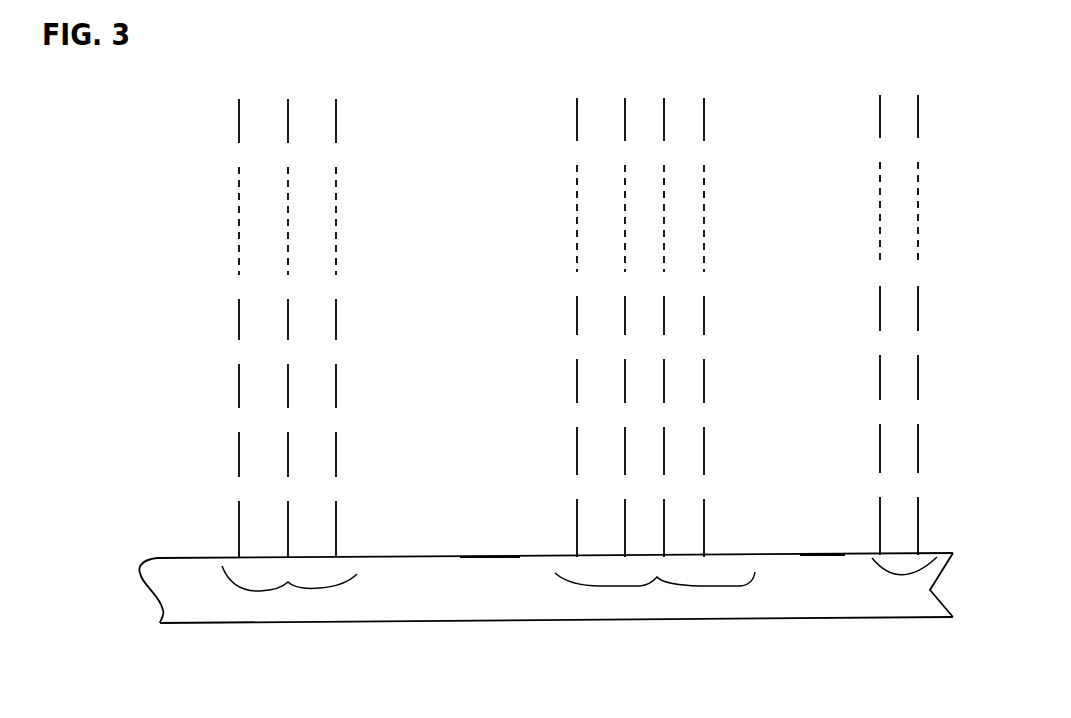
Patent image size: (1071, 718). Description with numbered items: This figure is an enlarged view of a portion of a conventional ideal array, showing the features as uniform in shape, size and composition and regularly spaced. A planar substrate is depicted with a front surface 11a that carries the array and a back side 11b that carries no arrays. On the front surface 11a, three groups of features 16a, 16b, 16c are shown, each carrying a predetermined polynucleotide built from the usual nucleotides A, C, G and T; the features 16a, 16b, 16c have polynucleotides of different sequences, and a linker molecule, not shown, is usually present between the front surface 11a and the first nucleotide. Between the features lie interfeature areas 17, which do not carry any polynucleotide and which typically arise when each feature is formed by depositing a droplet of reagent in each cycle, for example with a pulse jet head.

The front surface 11a is at (185, 557).
The back side 11b is at (180, 624).
The feature 16a is at (286, 585).
The feature 16b is at (655, 341).
The feature 16c is at (899, 333).
The interfeature area 17 is at (490, 556).